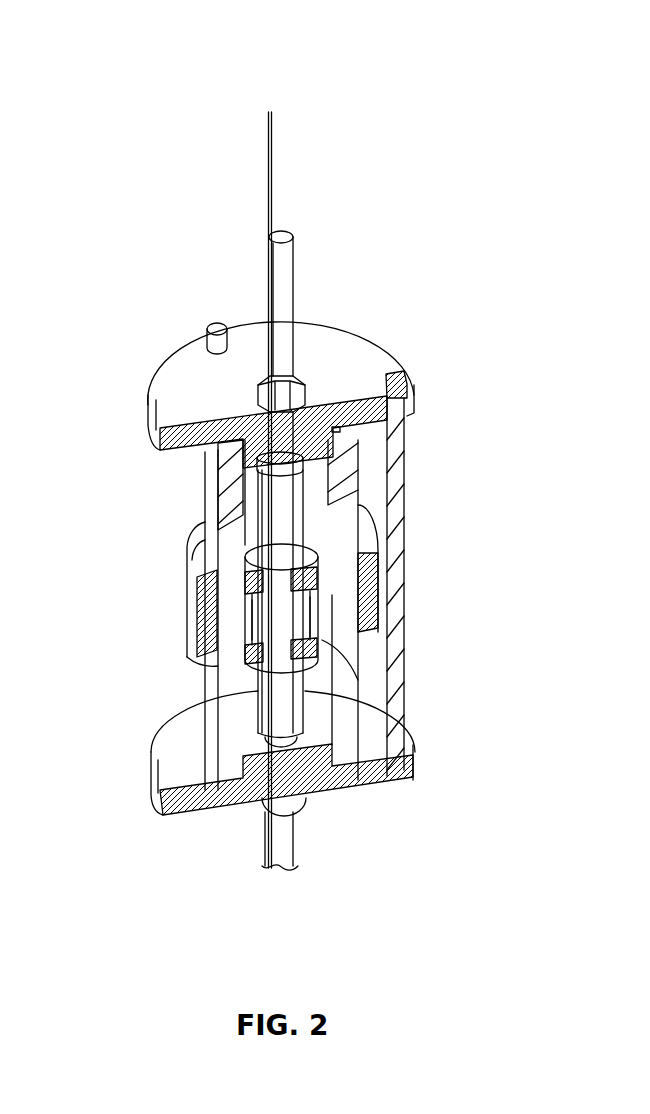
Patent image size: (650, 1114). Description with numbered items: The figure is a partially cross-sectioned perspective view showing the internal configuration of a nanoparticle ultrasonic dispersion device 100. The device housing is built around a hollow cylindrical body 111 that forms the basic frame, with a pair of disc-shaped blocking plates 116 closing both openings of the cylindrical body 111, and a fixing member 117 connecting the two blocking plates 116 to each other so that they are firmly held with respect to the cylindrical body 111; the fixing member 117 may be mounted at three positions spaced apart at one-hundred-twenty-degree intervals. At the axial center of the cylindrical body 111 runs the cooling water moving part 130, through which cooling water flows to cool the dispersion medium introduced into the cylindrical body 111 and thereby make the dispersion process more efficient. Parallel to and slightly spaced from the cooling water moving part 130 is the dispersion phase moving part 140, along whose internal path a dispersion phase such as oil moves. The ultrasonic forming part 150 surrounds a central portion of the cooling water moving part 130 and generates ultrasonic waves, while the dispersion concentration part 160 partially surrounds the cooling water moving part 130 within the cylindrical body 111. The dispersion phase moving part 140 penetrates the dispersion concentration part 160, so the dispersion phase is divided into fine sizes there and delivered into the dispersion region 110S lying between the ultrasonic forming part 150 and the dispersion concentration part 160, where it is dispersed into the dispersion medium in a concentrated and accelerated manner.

The nanoparticle ultrasonic dispersion device 100 is at (292, 44).
The dispersion region 110S is at (234, 604).
The cylindrical body 111 is at (211, 712).
The blocking plate 116 is at (185, 768).
The fixing member 117 is at (397, 636).
The cooling water moving part 130 is at (296, 508).
The dispersion phase moving part 140 is at (258, 470).
The ultrasonic forming part 150 is at (197, 612).
The dispersion concentration part 160 is at (262, 650).